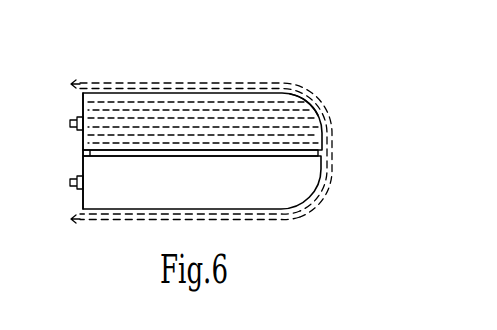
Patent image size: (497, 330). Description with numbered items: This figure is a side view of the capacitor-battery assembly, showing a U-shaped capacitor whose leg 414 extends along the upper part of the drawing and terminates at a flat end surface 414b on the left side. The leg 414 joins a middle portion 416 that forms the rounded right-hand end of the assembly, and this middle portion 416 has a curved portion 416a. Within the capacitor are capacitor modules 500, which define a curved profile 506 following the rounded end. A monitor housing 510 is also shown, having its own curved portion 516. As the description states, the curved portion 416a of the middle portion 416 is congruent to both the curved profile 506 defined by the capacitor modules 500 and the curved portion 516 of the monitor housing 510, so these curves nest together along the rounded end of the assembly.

The leg 414 is at (108, 93).
The flat end surface 414b is at (84, 114).
The middle portion 416 is at (237, 93).
The curved portion 416a is at (308, 97).
The capacitor modules 500 is at (193, 122).
The curved profile 506 is at (321, 102).
The monitor housing 510 is at (238, 215).
The curved portion 516 is at (332, 124).